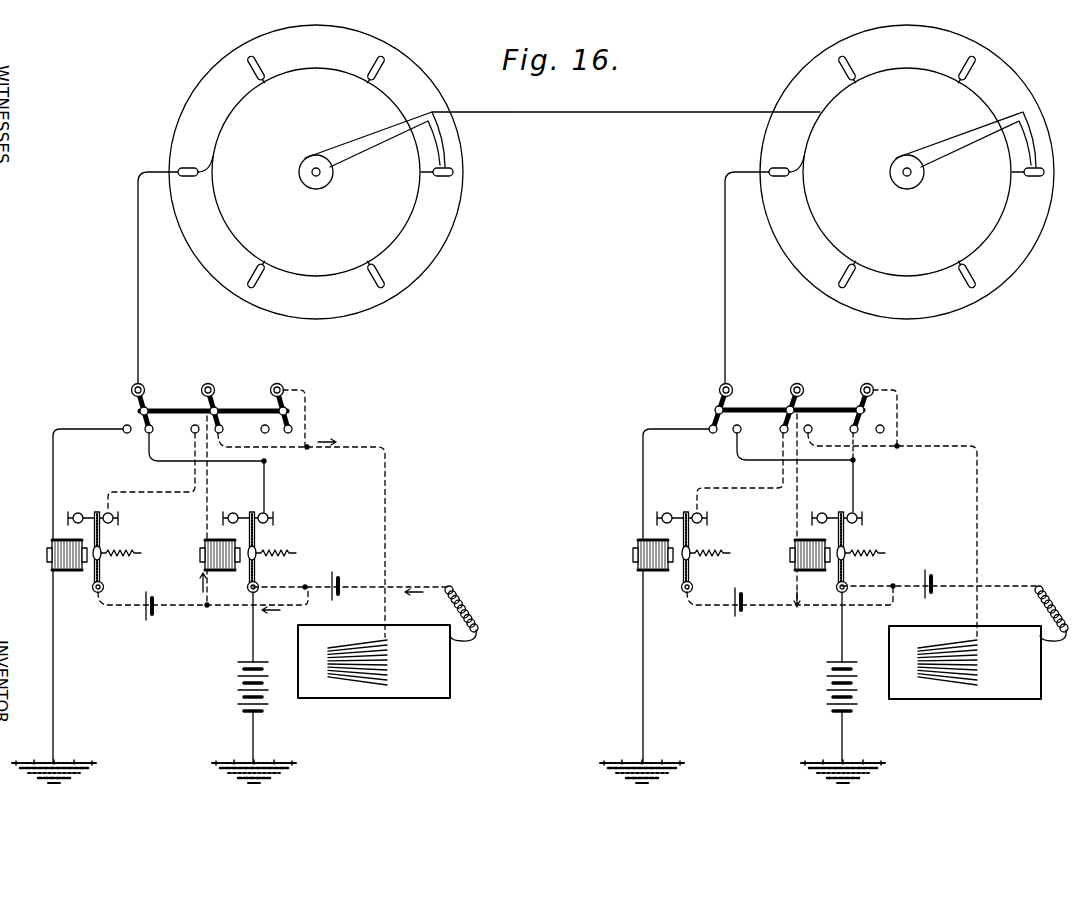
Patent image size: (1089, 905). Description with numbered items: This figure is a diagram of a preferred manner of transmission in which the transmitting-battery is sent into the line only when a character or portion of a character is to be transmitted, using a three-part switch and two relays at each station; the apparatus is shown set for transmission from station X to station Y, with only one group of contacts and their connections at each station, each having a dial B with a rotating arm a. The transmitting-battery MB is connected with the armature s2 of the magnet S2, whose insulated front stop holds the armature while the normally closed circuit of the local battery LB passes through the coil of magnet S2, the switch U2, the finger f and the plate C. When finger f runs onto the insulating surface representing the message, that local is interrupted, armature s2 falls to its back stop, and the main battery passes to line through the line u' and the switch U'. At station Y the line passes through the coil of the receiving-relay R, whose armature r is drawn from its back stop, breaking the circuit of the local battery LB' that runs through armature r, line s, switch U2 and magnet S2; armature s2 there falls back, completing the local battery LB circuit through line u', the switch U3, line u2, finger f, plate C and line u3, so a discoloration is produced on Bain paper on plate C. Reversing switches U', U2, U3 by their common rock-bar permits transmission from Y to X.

The transmitting station X is at (160, 53).
The receiving station Y is at (1057, 56).
The dial or disk B is at (611, 172).
The pointer arm a is at (383, 142).
The switch U' is at (420, 408).
The switch U2 is at (491, 407).
The switch U3 is at (560, 407).
The receiving-relay R is at (344, 555).
The armature of relay R r is at (399, 552).
The magnet S2 is at (503, 553).
The armature of magnet S2 s2 is at (554, 552).
The line s is at (445, 472).
The line u' is at (512, 472).
The line u2 is at (892, 513).
The line u3 is at (939, 594).
The local battery LB is at (630, 575).
The local battery LB' is at (444, 594).
The transmitting-battery MB is at (522, 686).
The plate C is at (669, 662).
The finger f is at (652, 655).